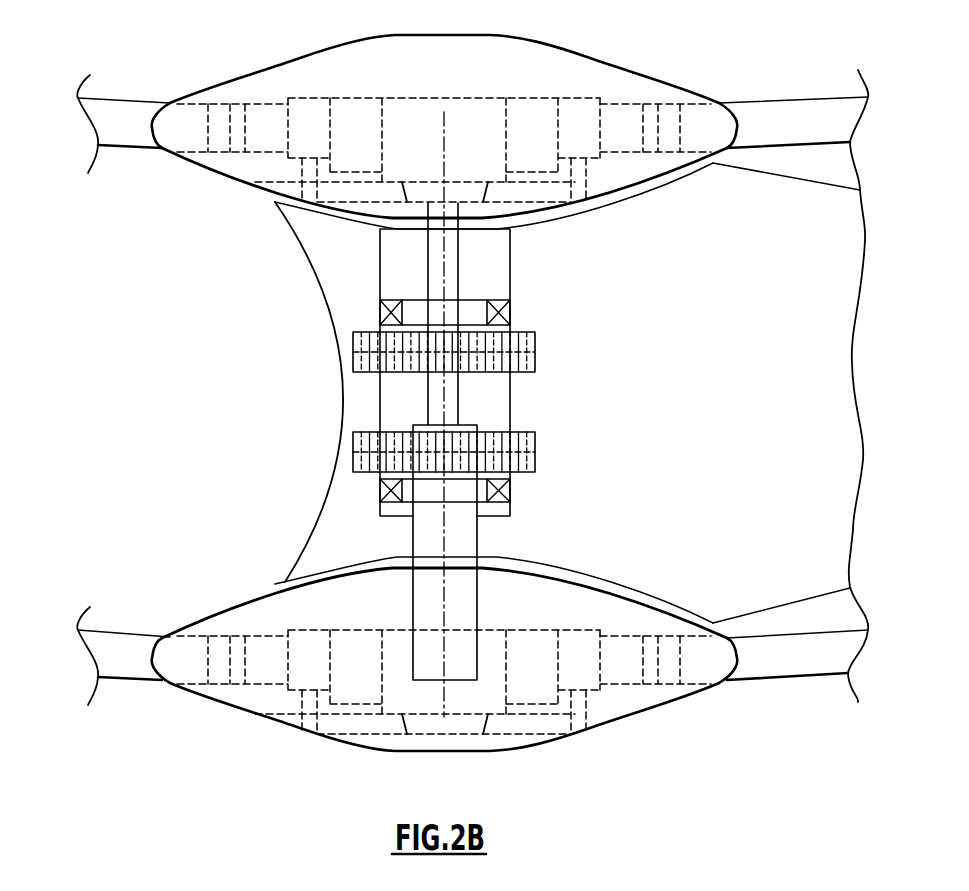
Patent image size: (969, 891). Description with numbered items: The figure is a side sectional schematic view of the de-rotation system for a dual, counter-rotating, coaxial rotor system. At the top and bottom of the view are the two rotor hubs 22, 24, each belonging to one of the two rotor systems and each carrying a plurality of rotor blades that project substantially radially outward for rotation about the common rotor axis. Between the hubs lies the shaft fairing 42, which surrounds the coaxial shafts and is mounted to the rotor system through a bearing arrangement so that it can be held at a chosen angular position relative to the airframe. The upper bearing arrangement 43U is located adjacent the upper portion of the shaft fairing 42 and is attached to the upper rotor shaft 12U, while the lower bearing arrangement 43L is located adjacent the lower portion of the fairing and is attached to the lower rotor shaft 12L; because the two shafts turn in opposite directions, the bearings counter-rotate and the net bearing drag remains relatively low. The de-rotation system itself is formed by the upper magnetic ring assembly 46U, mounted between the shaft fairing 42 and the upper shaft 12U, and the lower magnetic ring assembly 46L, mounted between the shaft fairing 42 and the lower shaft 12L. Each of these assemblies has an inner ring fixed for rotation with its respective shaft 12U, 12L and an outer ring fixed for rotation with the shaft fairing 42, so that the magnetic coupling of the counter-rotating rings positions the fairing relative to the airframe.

The rotor hub 22 is at (527, 75).
The rotor hub 24 is at (527, 609).
The shaft fairing 42 is at (714, 422).
The upper magnetic ring assembly 46U is at (554, 248).
The lower magnetic ring assembly 46L is at (551, 543).
The upper bearing arrangement 43U is at (500, 313).
The lower bearing arrangement 43L is at (503, 490).
The upper rotor shaft 12U is at (452, 383).
The lower rotor shaft 12L is at (423, 453).